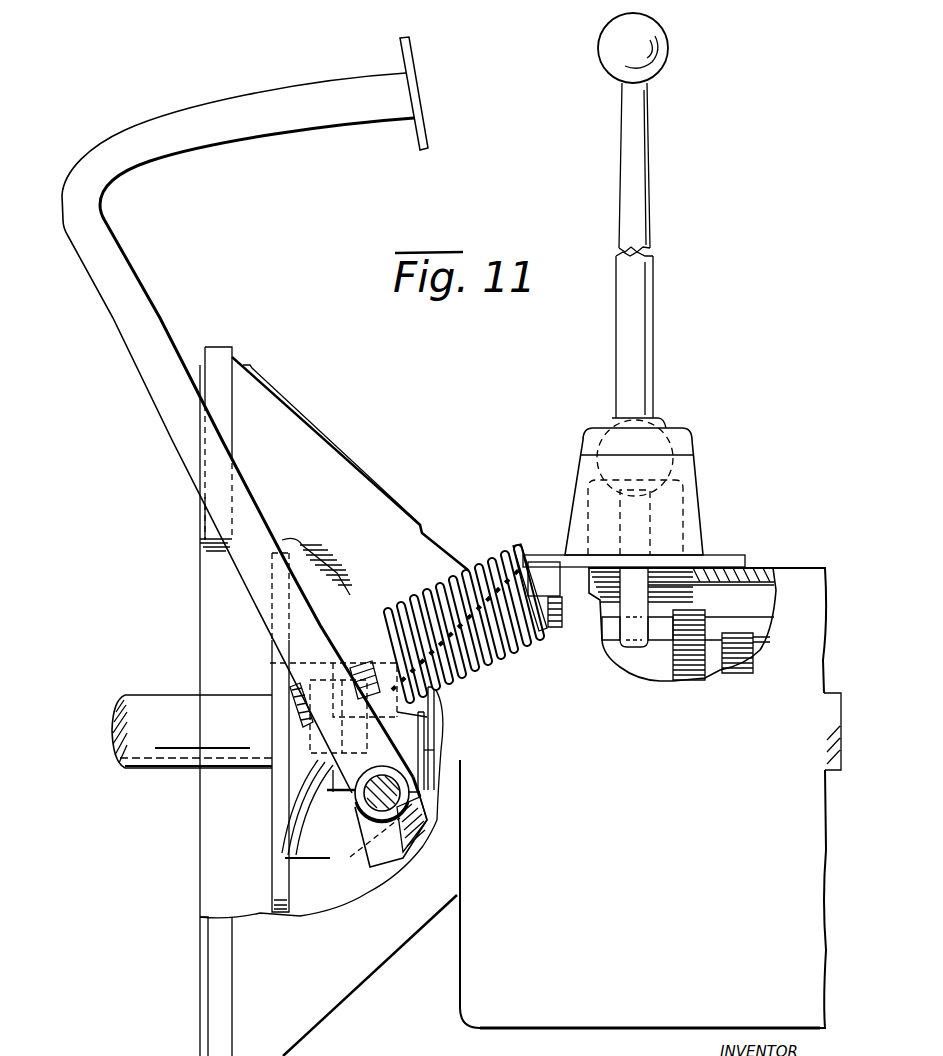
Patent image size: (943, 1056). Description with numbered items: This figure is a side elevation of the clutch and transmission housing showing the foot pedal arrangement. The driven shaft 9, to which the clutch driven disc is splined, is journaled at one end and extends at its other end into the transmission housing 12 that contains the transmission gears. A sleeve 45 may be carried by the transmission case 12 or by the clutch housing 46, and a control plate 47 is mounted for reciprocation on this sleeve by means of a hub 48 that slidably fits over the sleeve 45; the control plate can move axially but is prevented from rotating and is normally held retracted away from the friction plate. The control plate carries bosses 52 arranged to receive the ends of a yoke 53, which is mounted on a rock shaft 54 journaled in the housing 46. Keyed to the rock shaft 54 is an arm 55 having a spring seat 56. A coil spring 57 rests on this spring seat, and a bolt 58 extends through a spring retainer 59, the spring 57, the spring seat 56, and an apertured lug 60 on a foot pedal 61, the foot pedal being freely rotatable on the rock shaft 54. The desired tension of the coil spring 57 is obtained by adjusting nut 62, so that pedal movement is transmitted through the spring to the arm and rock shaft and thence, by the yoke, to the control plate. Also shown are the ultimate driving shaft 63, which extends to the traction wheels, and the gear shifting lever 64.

The driven shaft 9 is at (141, 698).
The transmission housing 12 is at (468, 985).
The sleeve 45 is at (428, 730).
The clutch housing 46 is at (383, 955).
The control plate 47 is at (270, 884).
The hub 48 is at (346, 800).
The bosses 52 is at (330, 780).
The yoke 53 is at (415, 850).
The rock shaft 54 is at (380, 817).
The arm 55 is at (430, 750).
The spring seat 56 is at (427, 717).
The coil spring 57 is at (465, 668).
The bolt 58 is at (493, 617).
The spring retainer 59 is at (517, 543).
The apertured lug 60 is at (270, 663).
The foot pedal 61 is at (208, 138).
The adjusting nut 62 is at (542, 562).
The ultimate driving shaft 63 is at (828, 715).
The gear shifting lever 64 is at (640, 368).